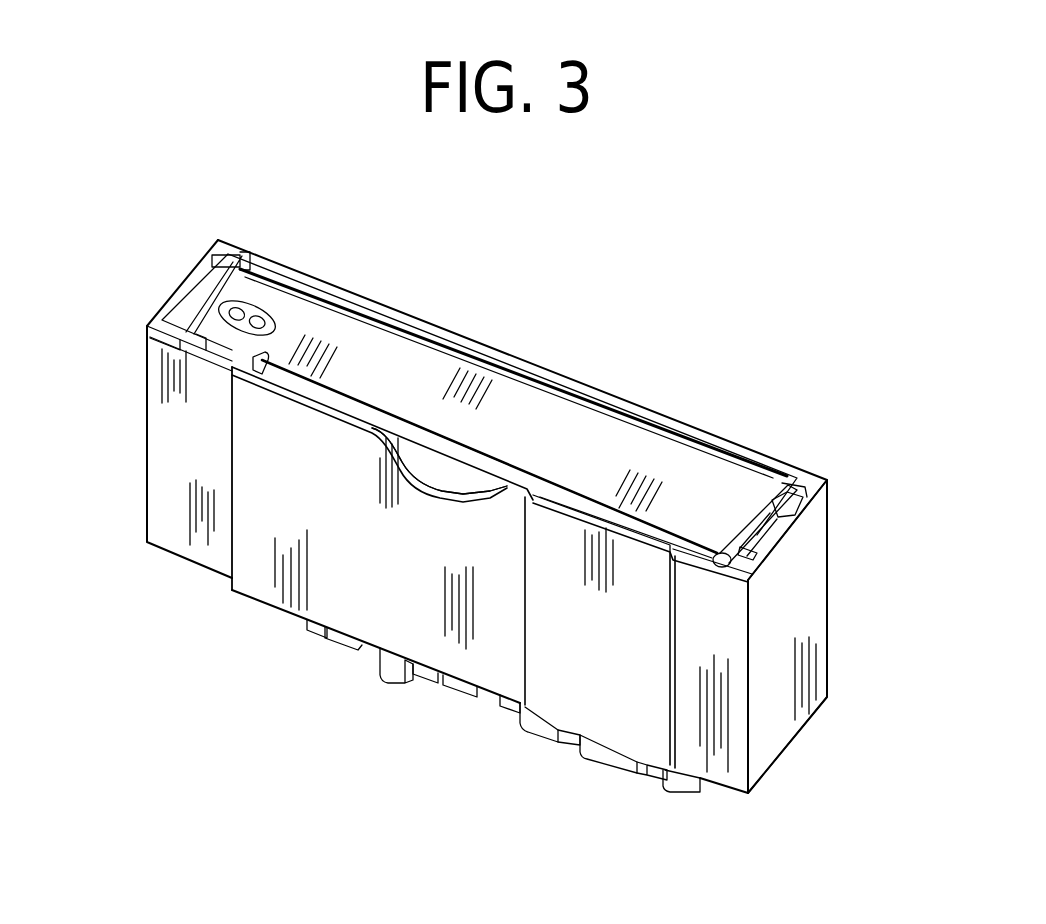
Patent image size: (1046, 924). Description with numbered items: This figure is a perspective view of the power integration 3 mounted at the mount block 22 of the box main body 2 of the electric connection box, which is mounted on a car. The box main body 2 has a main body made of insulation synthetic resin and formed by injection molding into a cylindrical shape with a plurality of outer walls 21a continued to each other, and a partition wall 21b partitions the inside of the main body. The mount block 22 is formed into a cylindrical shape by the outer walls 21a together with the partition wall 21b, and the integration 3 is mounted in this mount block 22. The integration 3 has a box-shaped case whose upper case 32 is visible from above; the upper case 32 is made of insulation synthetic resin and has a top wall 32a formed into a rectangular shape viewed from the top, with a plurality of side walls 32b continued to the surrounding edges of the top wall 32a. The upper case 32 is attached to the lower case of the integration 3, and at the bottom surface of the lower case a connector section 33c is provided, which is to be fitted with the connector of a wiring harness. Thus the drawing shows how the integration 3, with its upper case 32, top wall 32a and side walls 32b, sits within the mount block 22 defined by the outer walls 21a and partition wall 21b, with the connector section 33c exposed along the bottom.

The box main body 2 is at (493, 521).
The power integration 3 is at (493, 521).
The outer walls 21a is at (740, 447).
The partition wall 21b is at (173, 288).
The mount block 22 is at (832, 546).
The upper case 32 is at (495, 362).
The top wall 32a is at (660, 453).
The side walls 32b is at (463, 480).
The connector section 33c is at (537, 740).